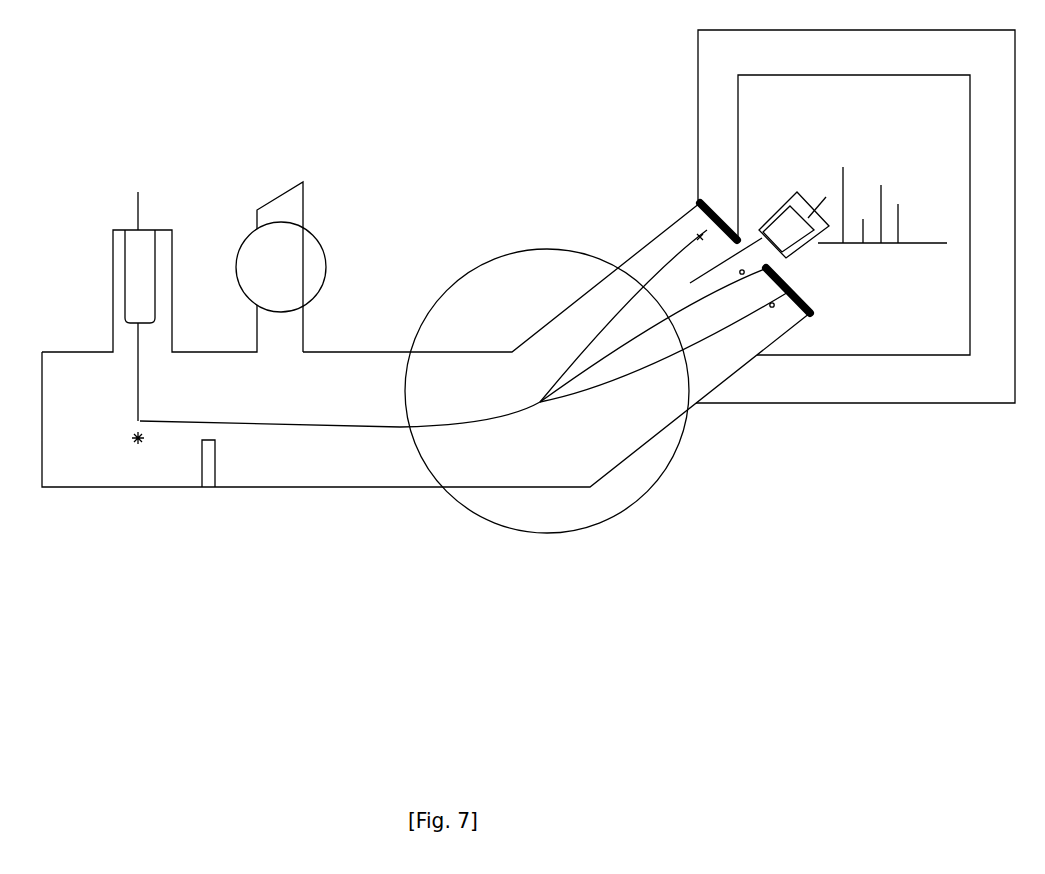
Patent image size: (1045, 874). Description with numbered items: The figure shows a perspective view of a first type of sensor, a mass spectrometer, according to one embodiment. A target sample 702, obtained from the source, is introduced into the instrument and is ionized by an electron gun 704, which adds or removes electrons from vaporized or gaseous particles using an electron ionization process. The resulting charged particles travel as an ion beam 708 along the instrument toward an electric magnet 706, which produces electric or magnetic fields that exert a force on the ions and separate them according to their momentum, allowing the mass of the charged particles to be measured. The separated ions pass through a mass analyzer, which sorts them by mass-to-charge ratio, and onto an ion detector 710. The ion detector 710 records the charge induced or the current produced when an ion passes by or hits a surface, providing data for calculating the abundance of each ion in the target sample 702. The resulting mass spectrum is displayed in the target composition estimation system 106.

The target composition estimation system 106 is at (890, 403).
The target sample 702 is at (138, 444).
The electron gun 704 is at (150, 238).
The electric magnet 706 is at (545, 250).
The ion beam 708 is at (325, 427).
The ion detector 710 is at (767, 222).